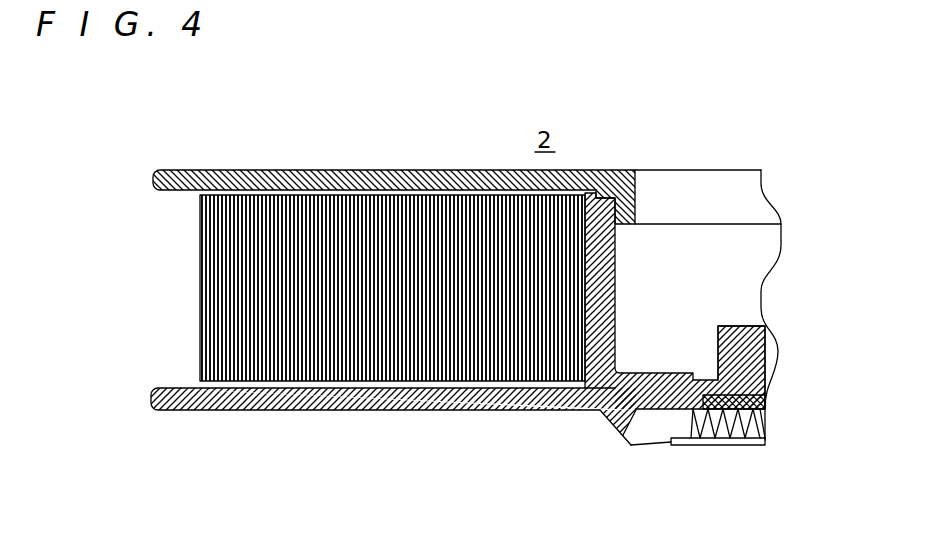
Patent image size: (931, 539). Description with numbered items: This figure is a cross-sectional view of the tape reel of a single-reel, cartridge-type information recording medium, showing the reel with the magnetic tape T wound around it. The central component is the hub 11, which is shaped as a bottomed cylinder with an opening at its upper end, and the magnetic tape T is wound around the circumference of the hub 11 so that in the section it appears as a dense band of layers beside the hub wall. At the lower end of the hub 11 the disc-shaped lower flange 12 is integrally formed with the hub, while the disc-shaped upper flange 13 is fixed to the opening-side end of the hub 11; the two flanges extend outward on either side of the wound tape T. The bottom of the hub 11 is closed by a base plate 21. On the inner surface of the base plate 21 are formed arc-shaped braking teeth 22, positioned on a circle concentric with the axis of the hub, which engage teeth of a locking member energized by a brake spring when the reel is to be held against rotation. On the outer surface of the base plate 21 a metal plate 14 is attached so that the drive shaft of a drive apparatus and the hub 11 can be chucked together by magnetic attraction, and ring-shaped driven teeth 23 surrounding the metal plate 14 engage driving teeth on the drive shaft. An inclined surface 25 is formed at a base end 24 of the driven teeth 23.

The magnetic tape T is at (198, 279).
The hub 11 is at (607, 262).
The lower flange 12 is at (143, 391).
The upper flange 13 is at (145, 168).
The metal plate 14 is at (765, 401).
The base plate 21 is at (648, 388).
The braking teeth 22 is at (770, 345).
The driven teeth 23 is at (670, 440).
The base end 24 is at (610, 421).
The inclined surface 25 is at (595, 413).